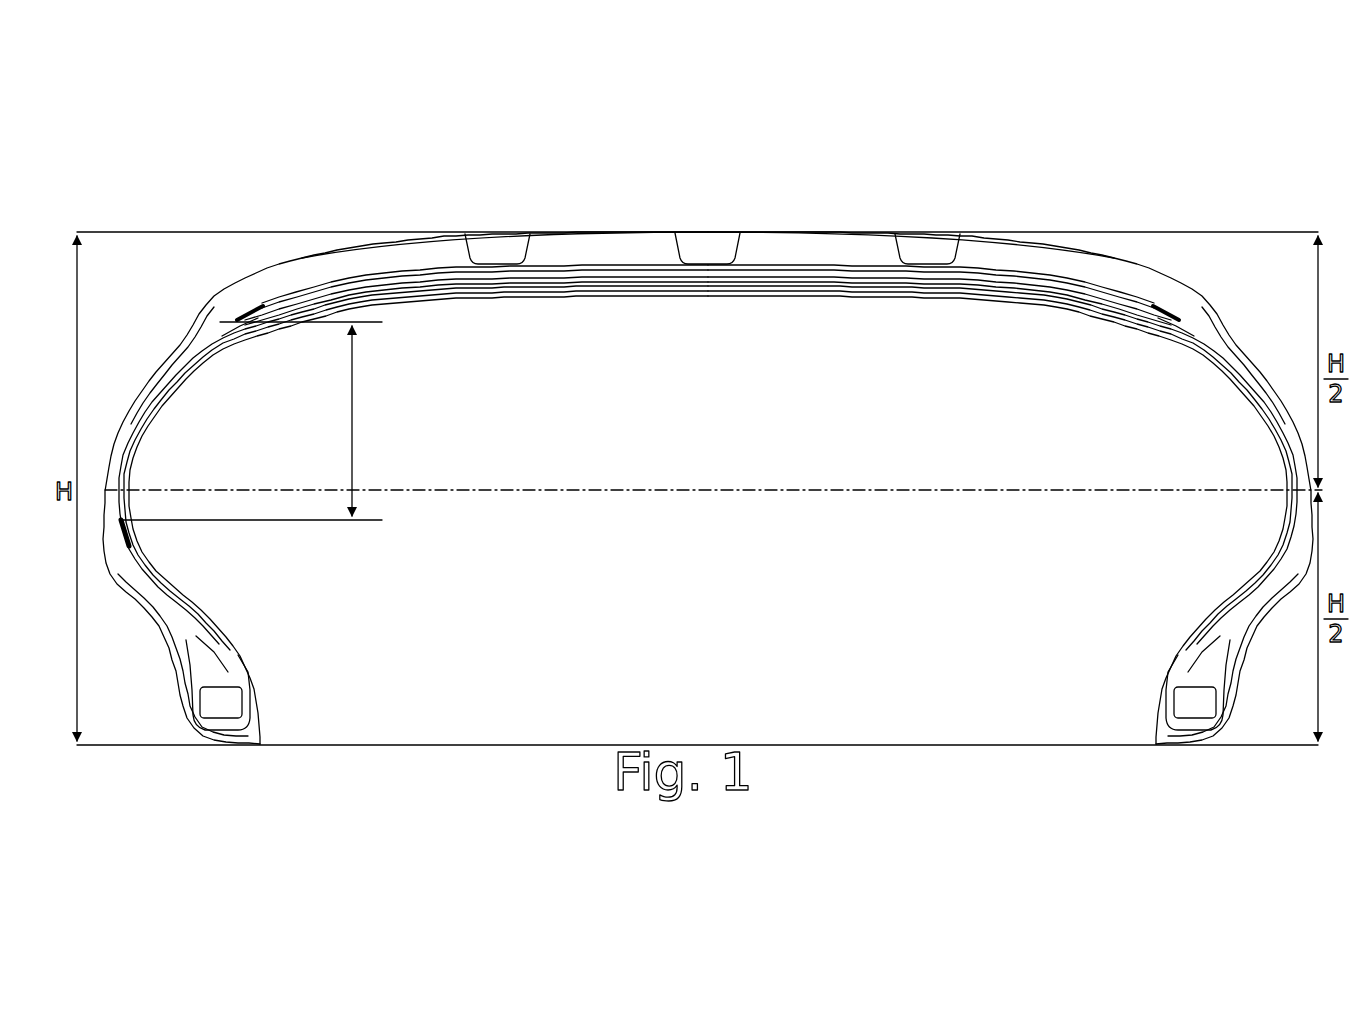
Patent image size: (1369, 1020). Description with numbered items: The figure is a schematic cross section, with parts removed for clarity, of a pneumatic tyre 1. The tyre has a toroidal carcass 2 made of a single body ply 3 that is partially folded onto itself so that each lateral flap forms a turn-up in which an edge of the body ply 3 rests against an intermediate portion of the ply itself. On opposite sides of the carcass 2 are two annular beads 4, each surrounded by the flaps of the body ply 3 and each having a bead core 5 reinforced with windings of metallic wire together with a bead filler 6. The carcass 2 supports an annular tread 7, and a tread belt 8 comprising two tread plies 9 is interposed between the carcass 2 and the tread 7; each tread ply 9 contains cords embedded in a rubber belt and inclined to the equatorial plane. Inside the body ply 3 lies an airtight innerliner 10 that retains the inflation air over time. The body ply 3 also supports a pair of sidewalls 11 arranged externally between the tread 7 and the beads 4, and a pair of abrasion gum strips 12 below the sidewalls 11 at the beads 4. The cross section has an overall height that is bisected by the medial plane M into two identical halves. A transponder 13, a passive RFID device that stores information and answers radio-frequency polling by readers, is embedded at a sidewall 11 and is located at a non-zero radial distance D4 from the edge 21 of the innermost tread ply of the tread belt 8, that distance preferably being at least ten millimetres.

The pneumatic tyre 1 is at (236, 138).
The toroidal carcass 2 is at (722, 180).
The body ply 3 is at (155, 393).
The annular bead 4 is at (284, 651).
The bead core 5 is at (217, 702).
The bead filler 6 is at (205, 648).
The annular tread 7 is at (573, 250).
The tread belt 8 is at (521, 326).
The tread ply 9 is at (570, 288).
The innerliner 10 is at (233, 343).
The sidewall 11 is at (120, 425).
The abrasion gum strip 12 is at (170, 643).
The transponder 13 is at (131, 533).
The edge of the tread belt 21 is at (240, 318).
The radial distance D4 is at (256, 421).
The medial plane M is at (577, 490).